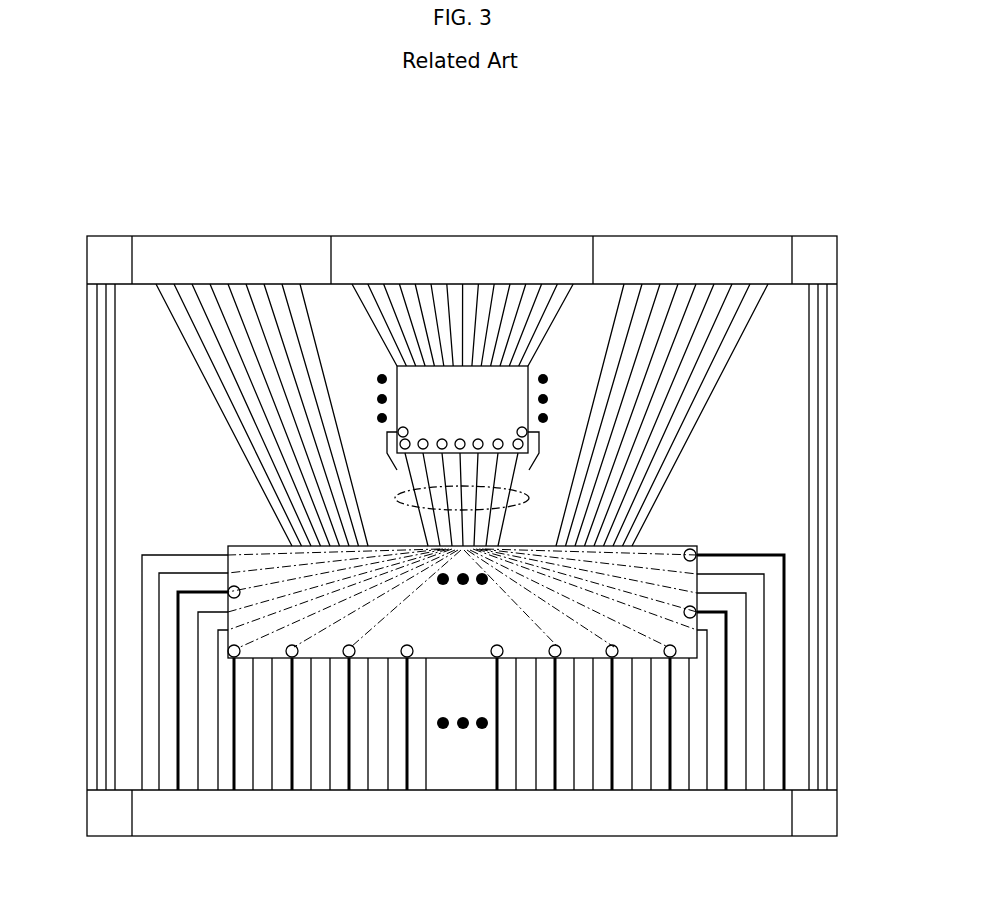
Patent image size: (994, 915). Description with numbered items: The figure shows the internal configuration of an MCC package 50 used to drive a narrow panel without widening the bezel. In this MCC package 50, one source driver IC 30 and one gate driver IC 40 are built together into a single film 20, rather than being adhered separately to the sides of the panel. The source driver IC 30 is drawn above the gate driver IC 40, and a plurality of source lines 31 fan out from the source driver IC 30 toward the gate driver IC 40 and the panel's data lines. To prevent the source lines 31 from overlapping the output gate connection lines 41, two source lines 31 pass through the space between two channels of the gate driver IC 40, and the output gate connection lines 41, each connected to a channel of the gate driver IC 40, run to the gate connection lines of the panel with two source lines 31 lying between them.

The MCC package 50 is at (70, 183).
The film 20 is at (762, 440).
The source driver IC 30 is at (507, 382).
The source lines 31 is at (529, 497).
The gate driver IC 40 is at (687, 638).
The output gate connection lines 41 is at (363, 758).